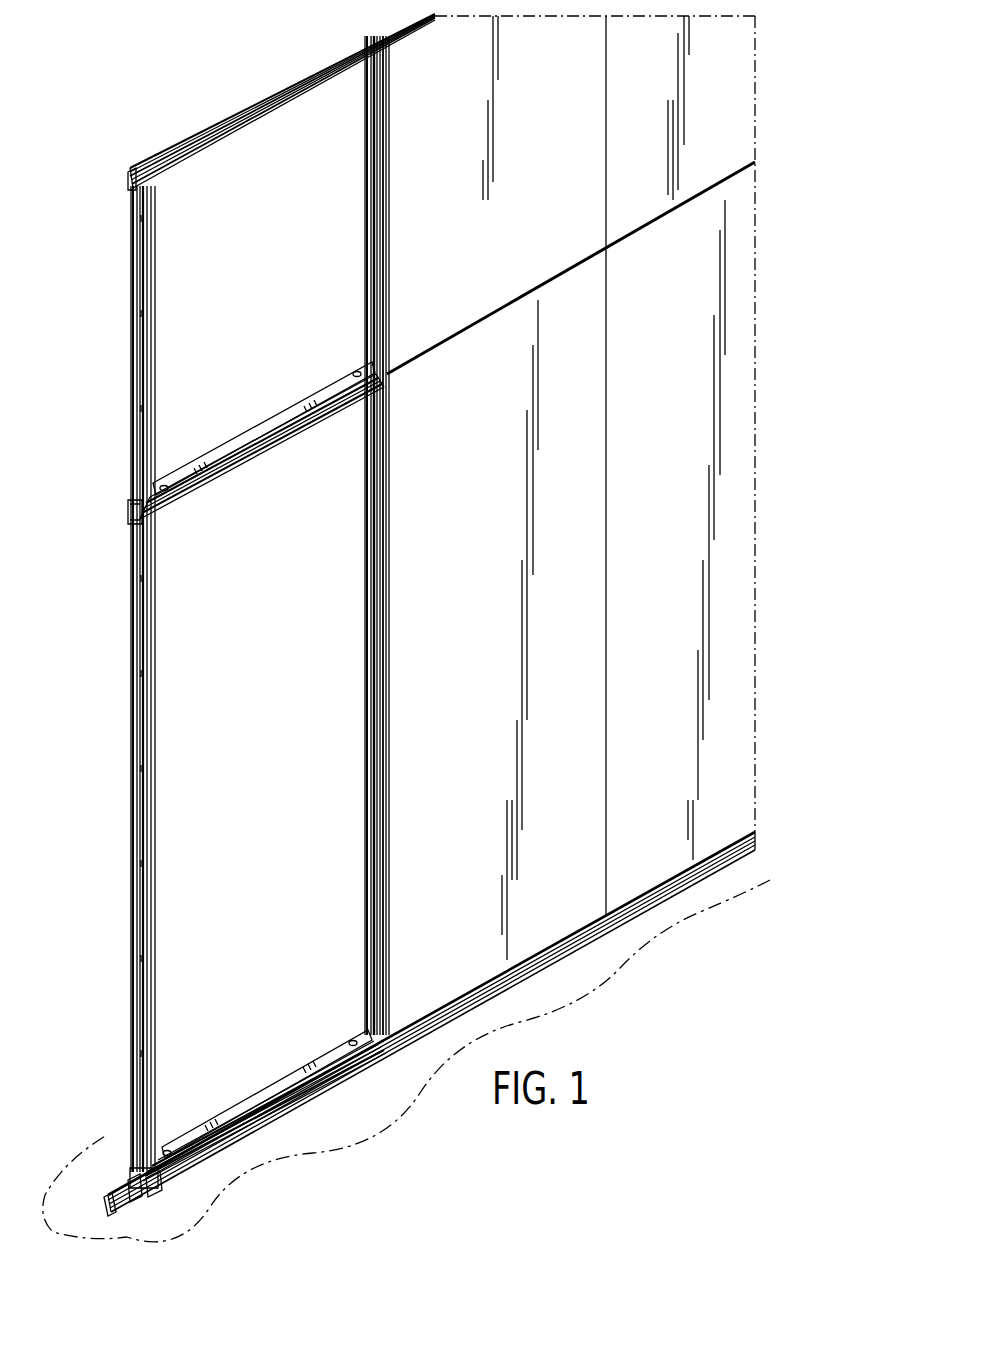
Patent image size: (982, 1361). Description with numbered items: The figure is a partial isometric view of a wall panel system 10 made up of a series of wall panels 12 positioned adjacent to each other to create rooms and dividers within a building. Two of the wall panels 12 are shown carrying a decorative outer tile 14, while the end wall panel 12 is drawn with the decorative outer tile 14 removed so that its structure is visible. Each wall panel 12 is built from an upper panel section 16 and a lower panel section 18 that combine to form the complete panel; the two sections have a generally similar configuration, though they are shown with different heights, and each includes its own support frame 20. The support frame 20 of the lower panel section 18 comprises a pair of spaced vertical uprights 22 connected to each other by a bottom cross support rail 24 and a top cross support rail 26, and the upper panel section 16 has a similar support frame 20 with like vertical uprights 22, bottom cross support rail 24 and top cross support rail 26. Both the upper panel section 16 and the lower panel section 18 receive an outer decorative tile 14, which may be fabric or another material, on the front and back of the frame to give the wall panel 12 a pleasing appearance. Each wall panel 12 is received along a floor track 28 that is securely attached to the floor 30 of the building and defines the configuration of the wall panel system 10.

The wall panel system 10 is at (627, 944).
The wall panel 12 is at (414, 60).
The decorative outer tile 14 is at (405, 682).
The upper panel section 16 is at (406, 196).
The lower panel section 18 is at (409, 517).
The support frame 20 is at (108, 336).
The vertical upright 22 is at (370, 285).
The bottom cross support rail 24 is at (288, 412).
The top cross support rail 26 is at (228, 146).
The floor track 28 is at (143, 1200).
The floor 30 is at (300, 1143).